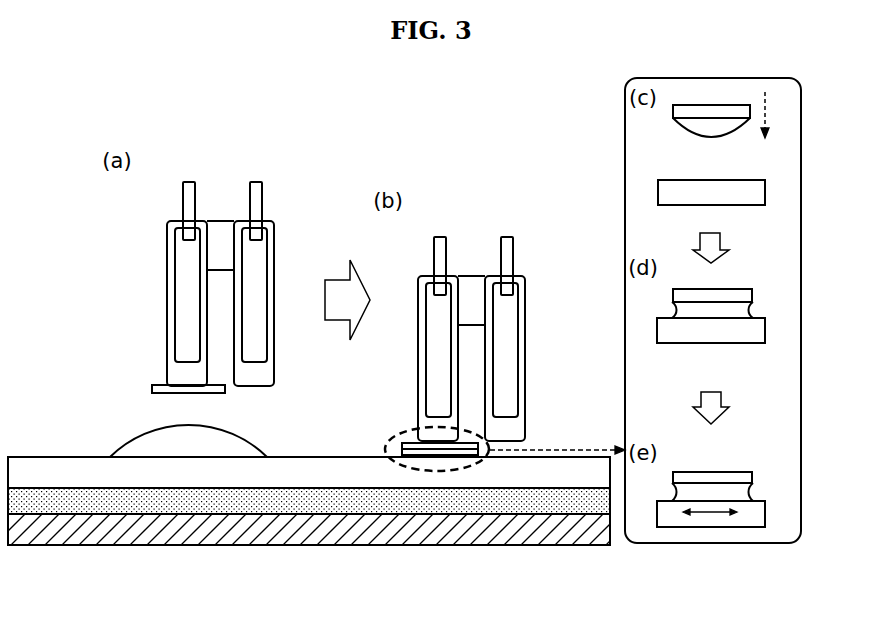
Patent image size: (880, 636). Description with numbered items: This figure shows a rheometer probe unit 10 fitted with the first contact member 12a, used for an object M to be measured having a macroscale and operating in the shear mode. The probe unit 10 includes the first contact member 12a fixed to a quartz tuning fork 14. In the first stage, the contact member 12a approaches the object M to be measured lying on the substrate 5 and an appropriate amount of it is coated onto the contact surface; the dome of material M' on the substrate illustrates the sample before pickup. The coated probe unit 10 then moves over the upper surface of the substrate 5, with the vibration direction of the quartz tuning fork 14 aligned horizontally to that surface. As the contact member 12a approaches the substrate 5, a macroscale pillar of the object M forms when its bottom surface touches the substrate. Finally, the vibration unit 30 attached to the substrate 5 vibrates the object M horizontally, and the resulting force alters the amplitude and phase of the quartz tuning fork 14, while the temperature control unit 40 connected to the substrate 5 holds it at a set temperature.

The probe unit 10 is at (360, 298).
The quartz tuning fork 14 is at (172, 304).
The first contact member 12a is at (153, 389).
The substrate 5 is at (50, 466).
The vibration unit 30 is at (50, 535).
The temperature control unit 40 is at (110, 505).
The material dome M' is at (188, 517).
The object to be measured M is at (577, 364).